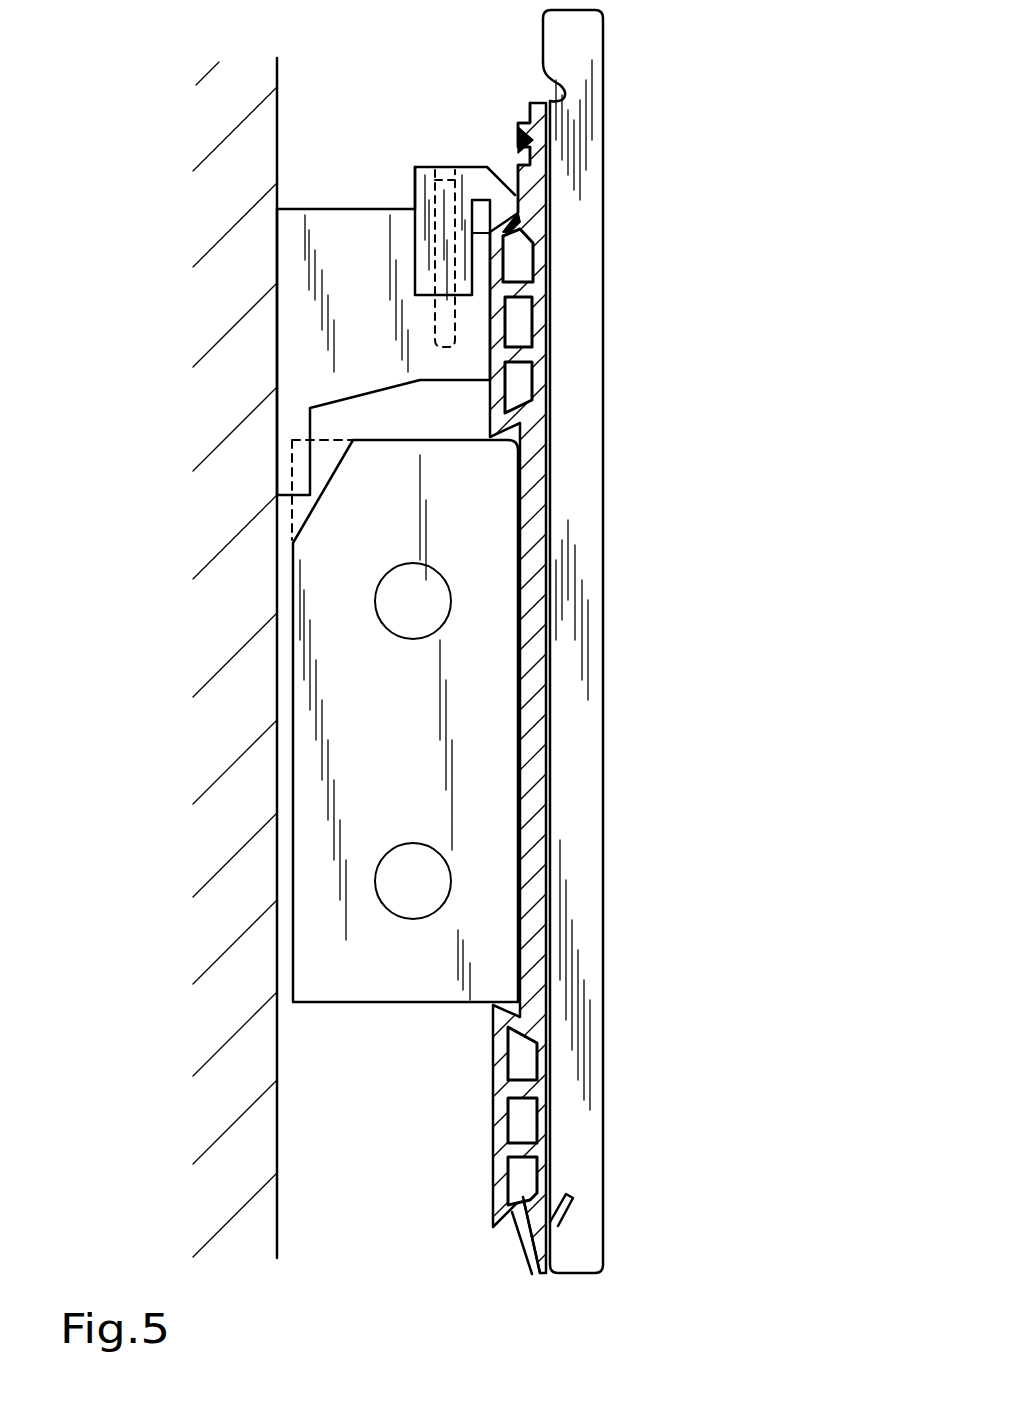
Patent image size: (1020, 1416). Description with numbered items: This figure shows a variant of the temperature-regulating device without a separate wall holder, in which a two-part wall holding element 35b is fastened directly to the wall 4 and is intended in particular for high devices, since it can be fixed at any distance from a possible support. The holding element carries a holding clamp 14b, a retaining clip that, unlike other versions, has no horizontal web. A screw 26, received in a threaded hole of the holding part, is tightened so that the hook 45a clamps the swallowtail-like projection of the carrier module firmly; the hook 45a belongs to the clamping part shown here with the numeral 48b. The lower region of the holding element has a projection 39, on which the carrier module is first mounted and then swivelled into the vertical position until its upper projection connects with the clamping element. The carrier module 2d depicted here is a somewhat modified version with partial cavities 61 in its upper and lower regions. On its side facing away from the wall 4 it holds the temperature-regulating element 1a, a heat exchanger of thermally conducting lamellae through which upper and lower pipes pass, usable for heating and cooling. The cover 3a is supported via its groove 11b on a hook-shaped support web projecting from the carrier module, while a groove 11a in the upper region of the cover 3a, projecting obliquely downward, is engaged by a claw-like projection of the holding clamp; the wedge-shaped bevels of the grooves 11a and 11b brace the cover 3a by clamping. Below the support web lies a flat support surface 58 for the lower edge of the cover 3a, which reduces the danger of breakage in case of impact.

The temperature-regulating element 1a is at (292, 808).
The rail 2d is at (548, 715).
The cover 3a is at (588, 540).
The wall 4 is at (240, 615).
The groove 11a is at (546, 86).
The groove 11b is at (574, 1191).
The holding clamp 14b is at (375, 181).
The screw 26 is at (433, 166).
The wall holding element 35b is at (276, 362).
The projection 39 is at (503, 159).
The hook 45a is at (511, 212).
The engaging claw 48b is at (511, 222).
The flat support surface 58 is at (531, 1252).
The partial cavities 61 is at (523, 328).